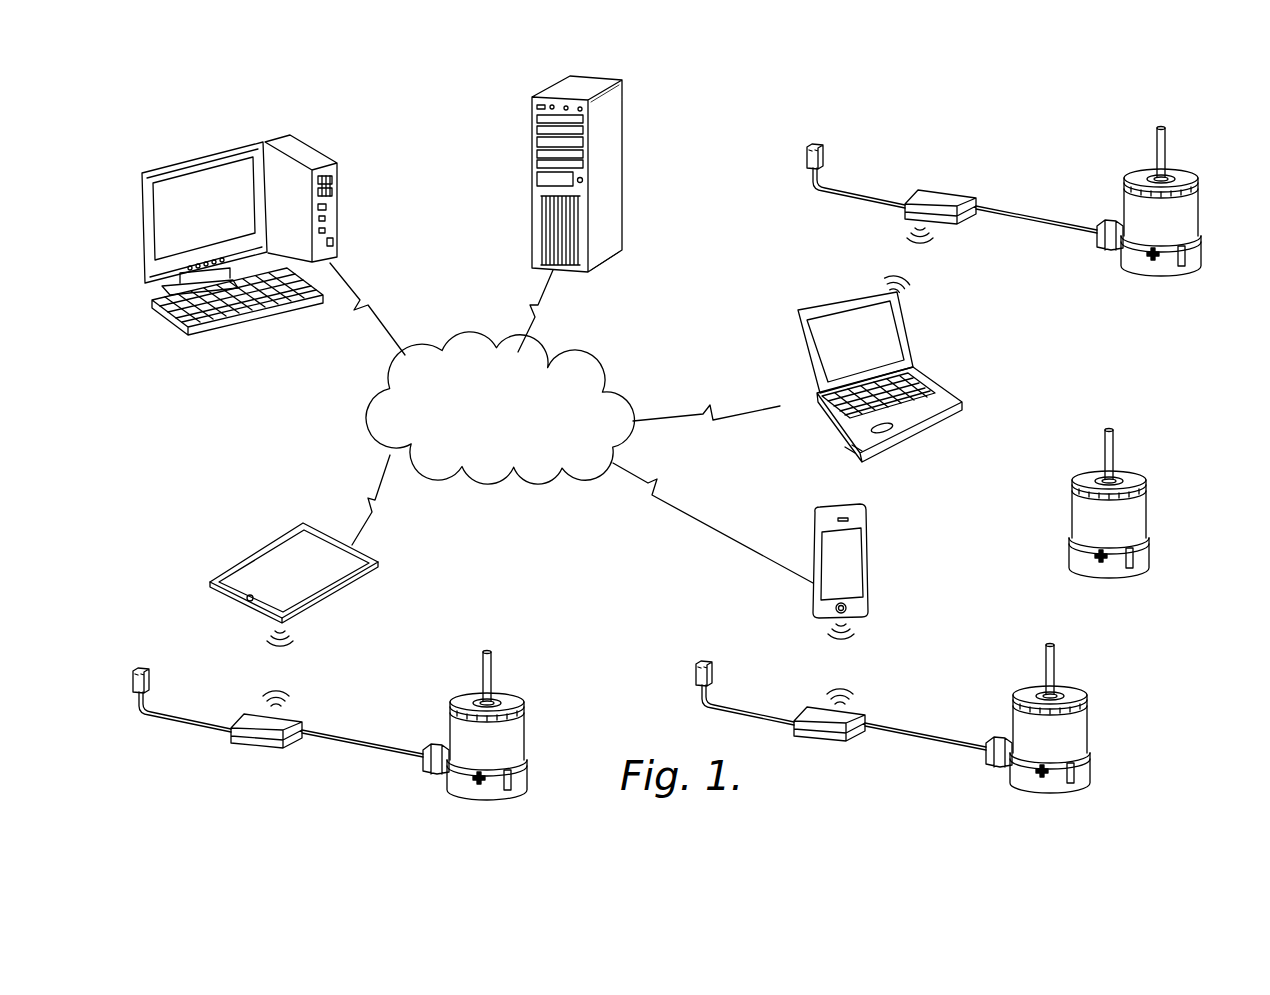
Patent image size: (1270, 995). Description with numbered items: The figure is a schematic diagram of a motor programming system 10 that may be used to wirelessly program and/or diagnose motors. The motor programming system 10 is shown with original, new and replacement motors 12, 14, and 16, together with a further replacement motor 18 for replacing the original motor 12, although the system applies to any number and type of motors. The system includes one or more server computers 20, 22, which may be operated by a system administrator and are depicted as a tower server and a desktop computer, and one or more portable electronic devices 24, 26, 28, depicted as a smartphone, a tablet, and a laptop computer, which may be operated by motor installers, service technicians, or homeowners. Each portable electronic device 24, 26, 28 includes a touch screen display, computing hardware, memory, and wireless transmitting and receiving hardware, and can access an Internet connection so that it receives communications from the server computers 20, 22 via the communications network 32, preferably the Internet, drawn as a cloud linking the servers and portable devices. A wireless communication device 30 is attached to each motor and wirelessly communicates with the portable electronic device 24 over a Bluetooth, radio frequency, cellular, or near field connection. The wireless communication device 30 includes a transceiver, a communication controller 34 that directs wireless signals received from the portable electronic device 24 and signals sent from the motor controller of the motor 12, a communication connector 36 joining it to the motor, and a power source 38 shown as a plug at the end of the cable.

The motor programming system 10 is at (1029, 164).
The original motor 12 is at (1105, 710).
The new motor 14 is at (540, 658).
The replacement motor 16 is at (1183, 135).
The replacement motor 18 is at (1155, 500).
The server computer 20 is at (632, 177).
The server computer 22 is at (350, 152).
The portable electronic device 24 is at (893, 553).
The portable electronic device 26 is at (385, 553).
The portable electronic device 28 is at (965, 378).
The wireless communication device 30 is at (816, 731).
The communications network 32 is at (560, 366).
The communication controller 34 is at (828, 742).
The communication connector 36 is at (928, 741).
The power source 38 is at (697, 680).